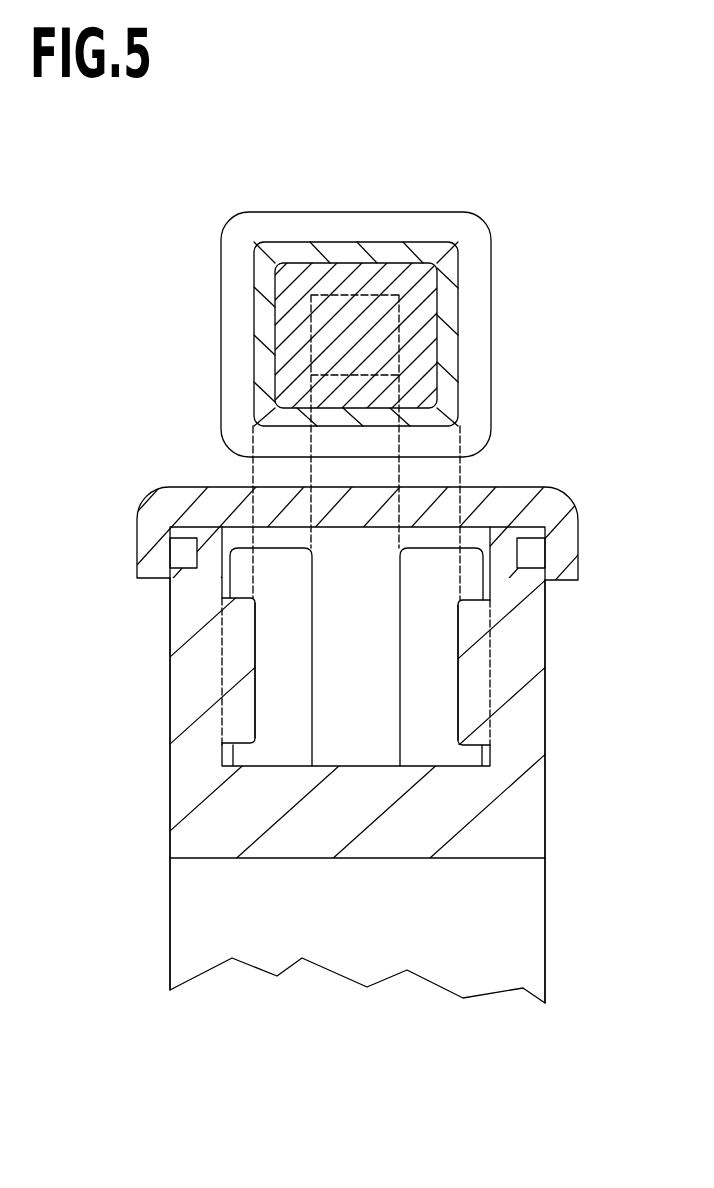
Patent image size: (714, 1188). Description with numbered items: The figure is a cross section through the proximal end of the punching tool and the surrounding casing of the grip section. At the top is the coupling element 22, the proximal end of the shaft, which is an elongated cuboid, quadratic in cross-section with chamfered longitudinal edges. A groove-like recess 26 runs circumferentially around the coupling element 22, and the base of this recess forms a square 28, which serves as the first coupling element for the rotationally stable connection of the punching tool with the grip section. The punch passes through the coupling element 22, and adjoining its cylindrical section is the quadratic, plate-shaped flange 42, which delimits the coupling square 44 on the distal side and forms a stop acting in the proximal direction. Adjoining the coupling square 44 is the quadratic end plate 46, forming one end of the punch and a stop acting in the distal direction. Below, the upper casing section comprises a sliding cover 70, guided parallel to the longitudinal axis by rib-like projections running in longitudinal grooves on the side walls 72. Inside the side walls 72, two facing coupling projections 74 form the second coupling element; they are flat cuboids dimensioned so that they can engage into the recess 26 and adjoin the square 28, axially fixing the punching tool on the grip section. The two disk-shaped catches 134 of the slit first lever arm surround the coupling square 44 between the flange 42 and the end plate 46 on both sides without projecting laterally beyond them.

The coupling element 22 is at (423, 212).
The recess 26 is at (460, 360).
The square 28 is at (460, 275).
The flange 42 is at (272, 312).
The coupling square 44 is at (308, 360).
The end plate 46 is at (294, 258).
The sliding cover 70 is at (527, 487).
The side walls 72 is at (168, 669).
The coupling projections 74 is at (257, 653).
The catches 134 is at (420, 577).